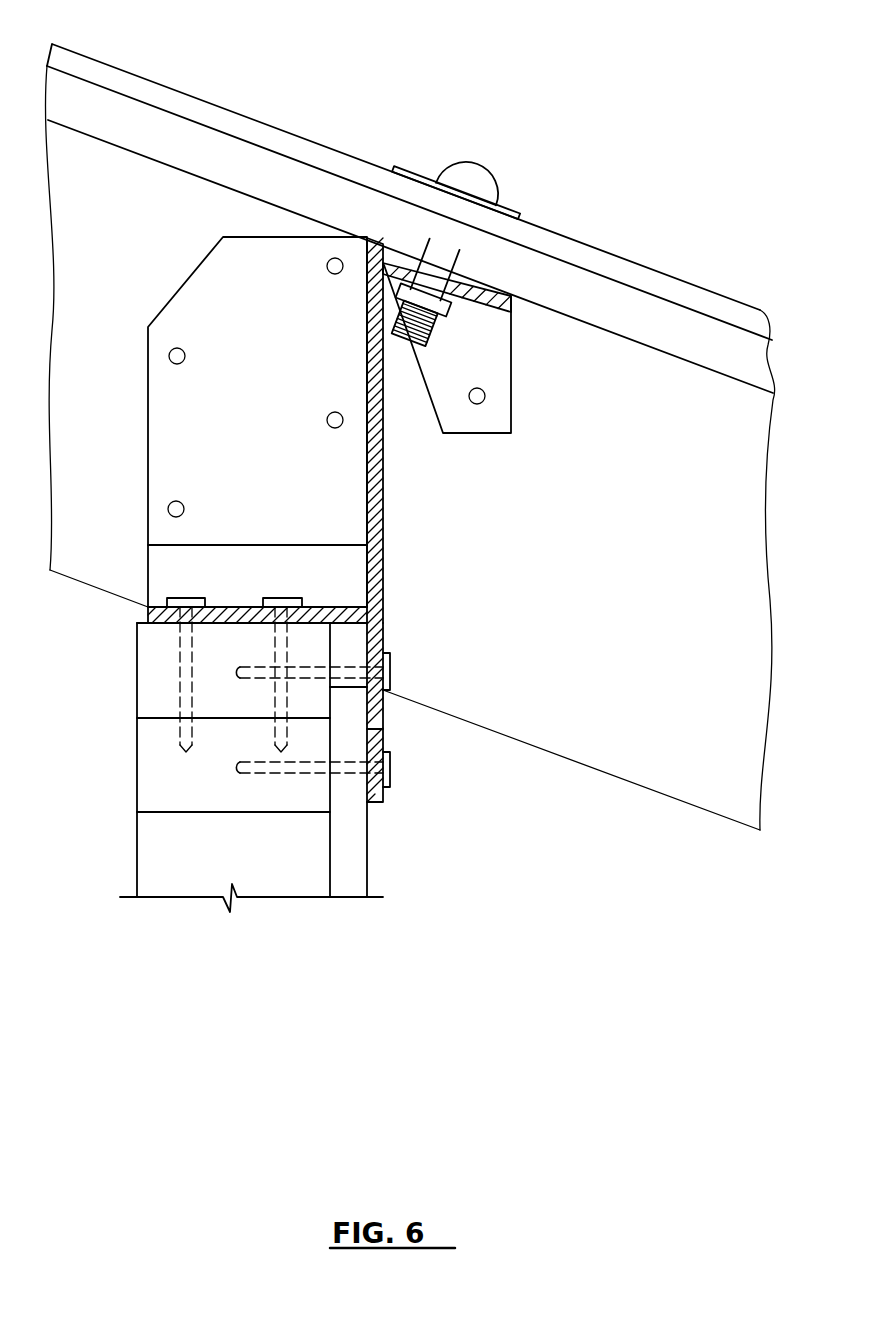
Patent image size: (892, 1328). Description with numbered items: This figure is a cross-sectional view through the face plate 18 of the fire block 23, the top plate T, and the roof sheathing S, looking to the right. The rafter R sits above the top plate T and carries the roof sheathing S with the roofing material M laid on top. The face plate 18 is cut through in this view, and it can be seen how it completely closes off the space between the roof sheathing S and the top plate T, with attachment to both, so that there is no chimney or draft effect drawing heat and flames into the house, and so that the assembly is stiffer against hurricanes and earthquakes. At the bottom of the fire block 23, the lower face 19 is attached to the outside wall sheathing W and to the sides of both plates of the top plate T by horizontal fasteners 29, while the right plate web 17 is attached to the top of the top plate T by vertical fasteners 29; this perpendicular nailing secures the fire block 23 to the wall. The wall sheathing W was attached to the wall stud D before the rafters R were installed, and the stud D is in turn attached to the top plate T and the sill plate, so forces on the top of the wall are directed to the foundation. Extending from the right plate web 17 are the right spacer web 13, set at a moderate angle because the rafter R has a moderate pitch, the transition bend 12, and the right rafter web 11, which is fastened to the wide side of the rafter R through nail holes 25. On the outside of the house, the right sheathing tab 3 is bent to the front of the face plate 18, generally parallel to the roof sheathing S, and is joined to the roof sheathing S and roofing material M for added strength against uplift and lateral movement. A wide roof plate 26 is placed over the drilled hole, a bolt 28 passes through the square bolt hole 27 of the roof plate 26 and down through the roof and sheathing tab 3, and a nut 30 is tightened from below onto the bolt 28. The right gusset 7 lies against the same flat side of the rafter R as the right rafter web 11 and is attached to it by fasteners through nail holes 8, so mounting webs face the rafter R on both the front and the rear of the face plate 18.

The roofing material M is at (112, 73).
The roof sheathing S is at (645, 320).
The rafter R is at (672, 430).
The roof plate 26 is at (407, 163).
The bolt 28 is at (475, 163).
The square bolt hole 27 is at (462, 177).
The nut 30 is at (452, 313).
The right sheathing tab 3 is at (492, 280).
The right gusset 7 is at (486, 420).
The nail hole 8 is at (483, 392).
The right rafter web 11 is at (228, 300).
The nail hole 25 is at (177, 350).
The transition bend 12 is at (163, 540).
The right spacer web 13 is at (163, 568).
The right plate web 17 is at (148, 608).
The fire block 23 is at (382, 537).
The face plate 18 is at (382, 597).
The lower face 19 is at (378, 707).
The fastener 29 is at (162, 737).
The top plate T is at (137, 727).
The wall sheathing W is at (353, 875).
The wall stud D is at (160, 877).